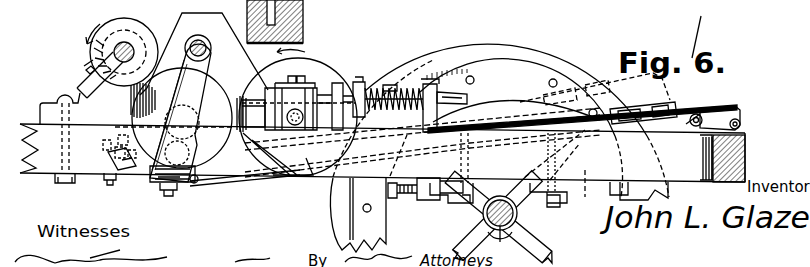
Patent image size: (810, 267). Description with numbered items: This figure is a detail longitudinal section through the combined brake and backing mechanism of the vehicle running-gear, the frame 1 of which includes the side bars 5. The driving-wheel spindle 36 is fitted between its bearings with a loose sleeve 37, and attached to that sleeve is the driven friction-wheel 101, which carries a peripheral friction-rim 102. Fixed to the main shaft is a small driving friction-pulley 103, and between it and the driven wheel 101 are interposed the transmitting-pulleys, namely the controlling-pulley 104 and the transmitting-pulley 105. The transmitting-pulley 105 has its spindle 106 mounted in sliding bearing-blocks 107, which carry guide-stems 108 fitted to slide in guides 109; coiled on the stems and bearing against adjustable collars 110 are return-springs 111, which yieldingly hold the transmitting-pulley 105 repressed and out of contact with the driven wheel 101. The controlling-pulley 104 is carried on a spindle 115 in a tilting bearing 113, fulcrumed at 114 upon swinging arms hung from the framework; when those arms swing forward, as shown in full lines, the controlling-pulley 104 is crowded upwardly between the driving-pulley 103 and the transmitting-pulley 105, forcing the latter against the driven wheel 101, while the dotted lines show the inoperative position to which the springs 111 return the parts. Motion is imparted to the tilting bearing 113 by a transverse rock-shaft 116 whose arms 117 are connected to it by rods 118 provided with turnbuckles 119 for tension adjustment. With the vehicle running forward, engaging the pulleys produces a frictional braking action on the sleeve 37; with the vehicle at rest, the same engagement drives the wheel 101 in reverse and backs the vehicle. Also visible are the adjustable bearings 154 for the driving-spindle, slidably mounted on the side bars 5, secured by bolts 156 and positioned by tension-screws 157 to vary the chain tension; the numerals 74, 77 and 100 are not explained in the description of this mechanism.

The frame 1 is at (594, 168).
The side bars 5 is at (40, 172).
The driving-wheel spindle 36 is at (518, 219).
The loose sleeve 37 is at (498, 217).
The lever 74 is at (663, 29).
The shaft 77 is at (450, 5).
The block 100 is at (307, 24).
The friction-wheel 101 is at (556, 68).
The peripheral friction-rim 102 is at (536, 56).
The friction-pulley 103 is at (112, 27).
The controlling-pulley 104 is at (232, 75).
The transmitting-pulley 105 is at (335, 84).
The spindle 106 is at (292, 126).
The sliding bearing-blocks 107 is at (308, 83).
The guide-stems 108 is at (468, 97).
The guides 109 is at (428, 79).
The adjustable collars 110 is at (366, 91).
The return-springs 111 is at (390, 85).
The tilting bearing 113 is at (112, 174).
The fulcrum 114 is at (123, 124).
The spindle 115 is at (197, 110).
The rock-shaft 116 is at (700, 165).
The arms 117 is at (733, 108).
The rods 118 is at (238, 179).
The turnbuckles 119 is at (627, 109).
The adjustable bearings 154 is at (425, 204).
The bolts 156 is at (554, 208).
The tension-screws 157 is at (392, 185).